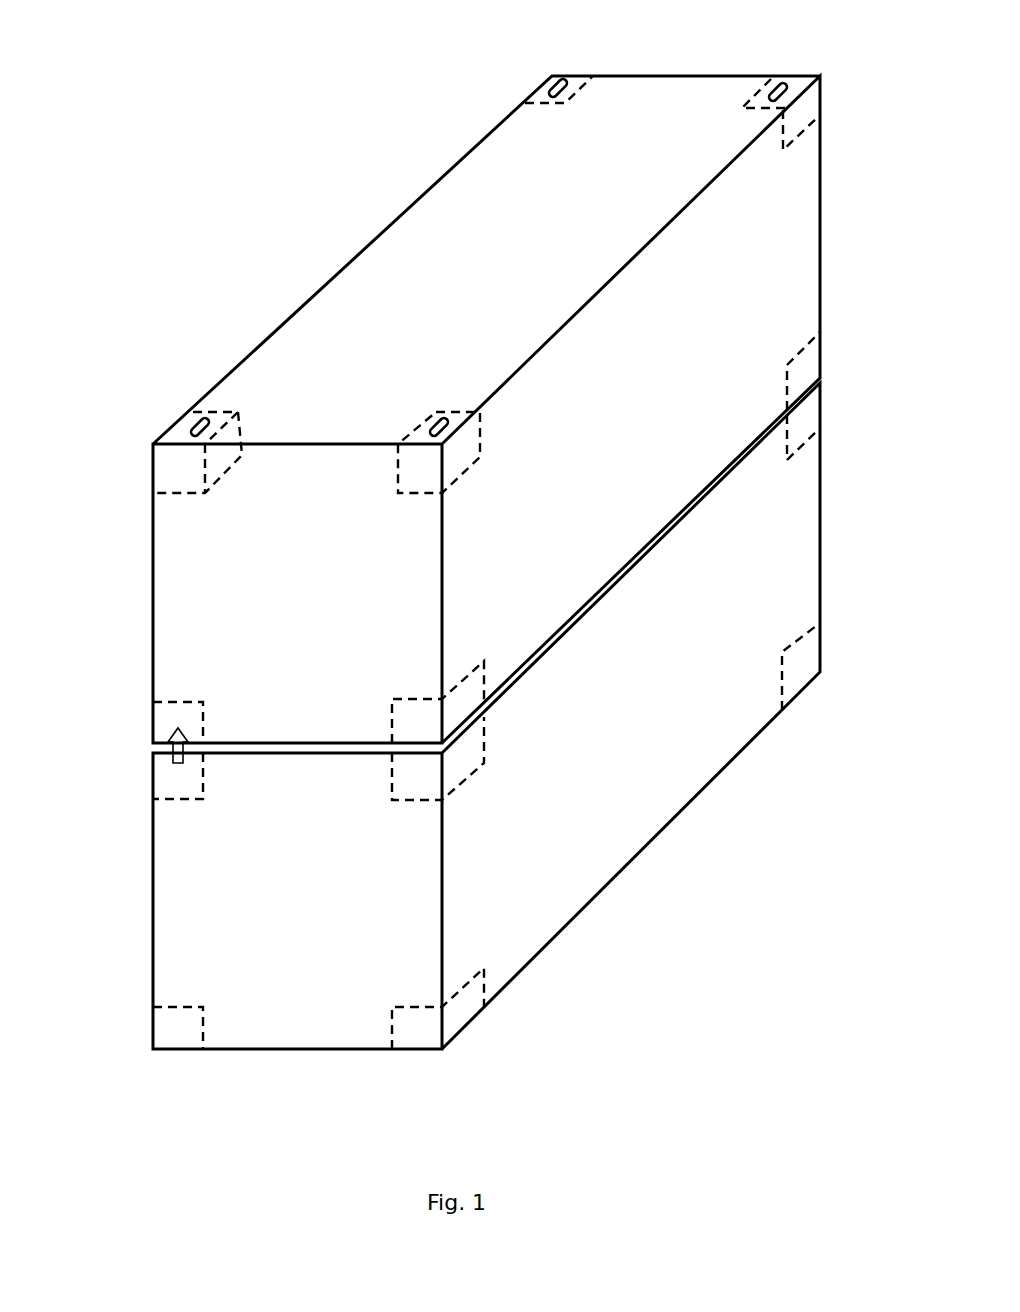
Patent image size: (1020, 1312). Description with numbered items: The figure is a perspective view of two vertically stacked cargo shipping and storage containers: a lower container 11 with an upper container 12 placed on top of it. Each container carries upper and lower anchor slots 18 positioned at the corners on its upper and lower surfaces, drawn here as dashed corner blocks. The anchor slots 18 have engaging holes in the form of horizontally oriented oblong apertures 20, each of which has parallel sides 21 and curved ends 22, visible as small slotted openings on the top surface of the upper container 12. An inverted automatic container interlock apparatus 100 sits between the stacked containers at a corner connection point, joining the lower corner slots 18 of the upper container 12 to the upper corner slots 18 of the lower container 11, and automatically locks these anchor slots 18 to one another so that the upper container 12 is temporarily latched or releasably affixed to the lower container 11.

The lower container 11 is at (693, 603).
The upper container 12 is at (681, 405).
The anchor slot 18 is at (540, 95).
The oblong aperture 20 is at (556, 82).
The parallel side 21 is at (190, 426).
The curved end 22 is at (208, 419).
The automatic container interlock apparatus 100 is at (170, 742).